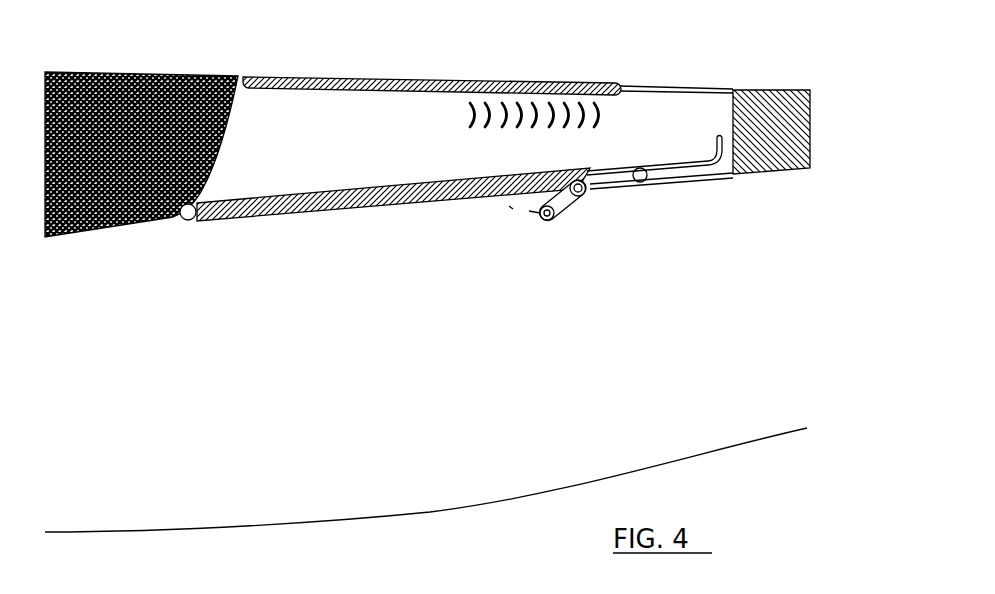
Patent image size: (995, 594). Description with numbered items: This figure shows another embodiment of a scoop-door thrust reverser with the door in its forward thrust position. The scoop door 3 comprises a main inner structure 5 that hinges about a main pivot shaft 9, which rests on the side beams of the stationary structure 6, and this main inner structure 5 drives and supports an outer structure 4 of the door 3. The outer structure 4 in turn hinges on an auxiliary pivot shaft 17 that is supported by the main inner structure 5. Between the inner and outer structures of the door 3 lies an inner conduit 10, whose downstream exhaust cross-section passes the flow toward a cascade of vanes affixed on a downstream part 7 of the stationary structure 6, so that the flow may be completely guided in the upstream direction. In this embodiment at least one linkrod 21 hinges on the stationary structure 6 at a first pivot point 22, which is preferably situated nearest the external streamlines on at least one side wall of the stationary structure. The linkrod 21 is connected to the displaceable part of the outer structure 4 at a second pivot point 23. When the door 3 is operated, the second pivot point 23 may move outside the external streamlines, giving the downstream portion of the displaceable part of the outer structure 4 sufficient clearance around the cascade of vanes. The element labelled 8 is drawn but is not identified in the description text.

The scoop door 3 is at (423, 112).
The outer structure 4 is at (298, 78).
The main inner structure 5 is at (326, 198).
The stationary structure 6 is at (88, 43).
The downstream part of the stationary structure 7 is at (777, 118).
The front block 8 is at (115, 182).
The main pivot shaft 9 is at (615, 268).
The inner conduit 10 is at (356, 140).
The auxiliary pivot shaft 17 is at (260, 180).
The linkrod 21 is at (567, 200).
The first pivot point 22 is at (545, 213).
The second pivot point 23 is at (578, 190).